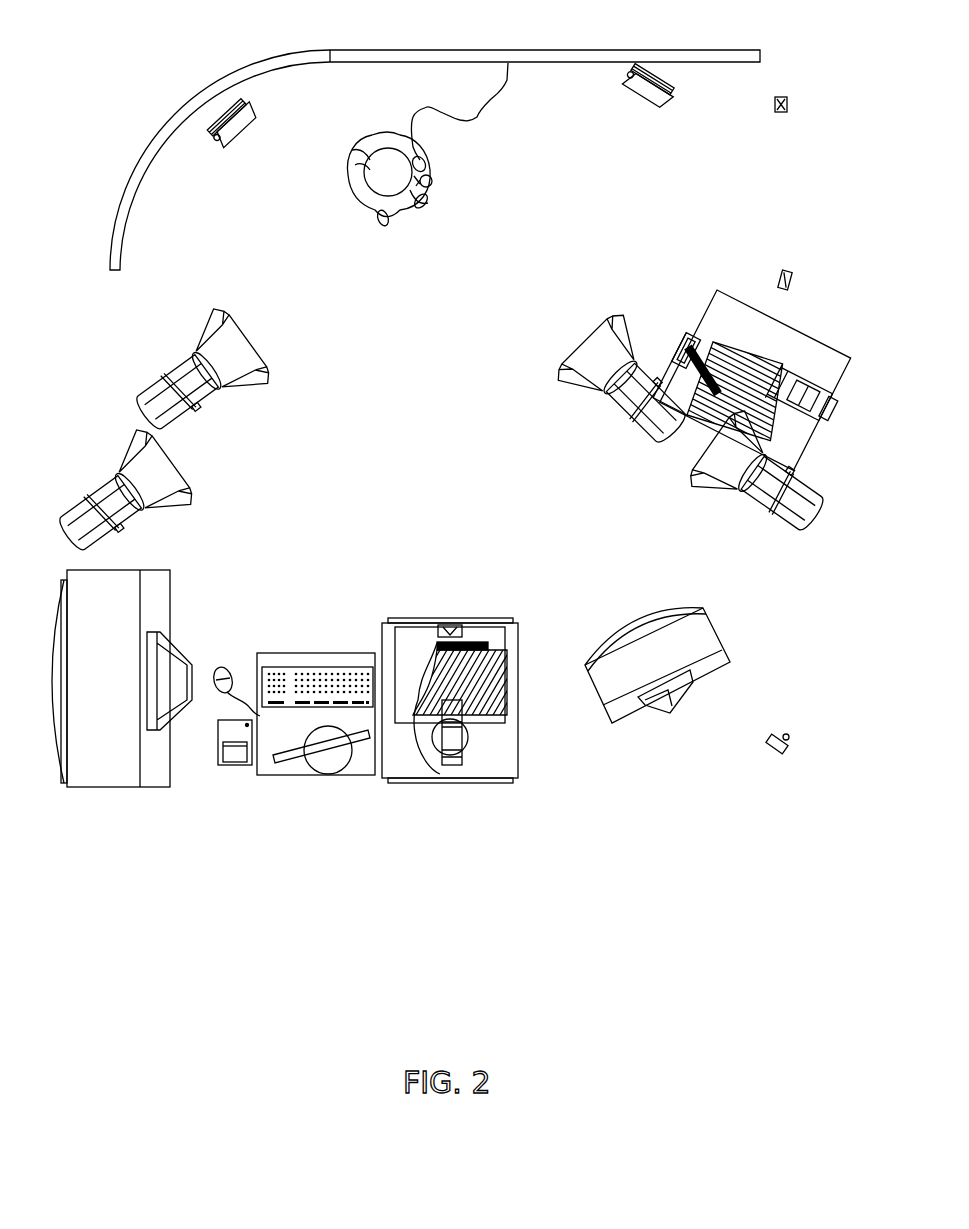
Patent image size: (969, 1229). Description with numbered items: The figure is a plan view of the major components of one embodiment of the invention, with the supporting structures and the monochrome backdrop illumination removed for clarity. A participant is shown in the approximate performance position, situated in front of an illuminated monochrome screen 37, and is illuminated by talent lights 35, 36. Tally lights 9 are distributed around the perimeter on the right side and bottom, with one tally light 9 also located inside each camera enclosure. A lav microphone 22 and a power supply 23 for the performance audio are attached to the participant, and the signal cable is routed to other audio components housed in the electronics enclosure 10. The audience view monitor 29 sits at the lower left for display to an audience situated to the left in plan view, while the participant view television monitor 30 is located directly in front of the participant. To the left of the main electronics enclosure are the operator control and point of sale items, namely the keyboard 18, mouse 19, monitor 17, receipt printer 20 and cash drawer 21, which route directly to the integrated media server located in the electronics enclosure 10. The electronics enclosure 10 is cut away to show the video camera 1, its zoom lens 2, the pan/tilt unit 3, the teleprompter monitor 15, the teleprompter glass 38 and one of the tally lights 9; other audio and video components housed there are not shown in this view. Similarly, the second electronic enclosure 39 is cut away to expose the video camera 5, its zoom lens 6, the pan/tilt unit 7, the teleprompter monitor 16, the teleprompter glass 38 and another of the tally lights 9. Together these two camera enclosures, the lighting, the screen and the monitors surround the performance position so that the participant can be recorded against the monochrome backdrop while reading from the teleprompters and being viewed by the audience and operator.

The video camera 1 is at (463, 755).
The zoom lens 2 is at (472, 736).
The pan/tilt unit 3 is at (480, 762).
The video camera 5 is at (806, 382).
The zoom lens 6 is at (778, 362).
The pan/tilt unit 7 is at (820, 398).
The tally lights 9 is at (788, 101).
The electronics enclosure 10 is at (410, 773).
The teleprompter monitor 15 is at (490, 640).
The teleprompter monitor 16 is at (678, 372).
The monitor 17 is at (314, 762).
The keyboard 18 is at (333, 673).
The mouse 19 is at (222, 667).
The receipt printer 20 is at (233, 765).
The cash drawer 21 is at (282, 660).
The lav microphone 22 is at (432, 176).
The power supply 23 is at (428, 152).
The audience view monitor 29 is at (152, 612).
The participant view television monitor 30 is at (700, 642).
The talent lights 35 is at (140, 412).
The talent lights 36 is at (216, 143).
The illuminated monochrome screen 37 is at (548, 50).
The teleprompter glass 38 is at (732, 440).
The electronic enclosure 39 is at (783, 337).